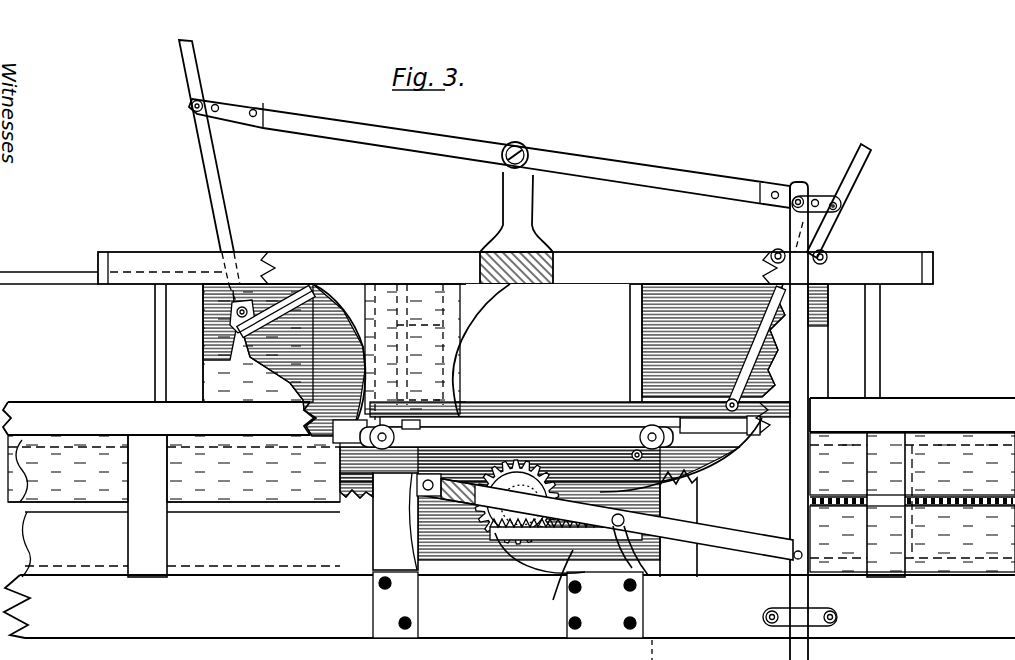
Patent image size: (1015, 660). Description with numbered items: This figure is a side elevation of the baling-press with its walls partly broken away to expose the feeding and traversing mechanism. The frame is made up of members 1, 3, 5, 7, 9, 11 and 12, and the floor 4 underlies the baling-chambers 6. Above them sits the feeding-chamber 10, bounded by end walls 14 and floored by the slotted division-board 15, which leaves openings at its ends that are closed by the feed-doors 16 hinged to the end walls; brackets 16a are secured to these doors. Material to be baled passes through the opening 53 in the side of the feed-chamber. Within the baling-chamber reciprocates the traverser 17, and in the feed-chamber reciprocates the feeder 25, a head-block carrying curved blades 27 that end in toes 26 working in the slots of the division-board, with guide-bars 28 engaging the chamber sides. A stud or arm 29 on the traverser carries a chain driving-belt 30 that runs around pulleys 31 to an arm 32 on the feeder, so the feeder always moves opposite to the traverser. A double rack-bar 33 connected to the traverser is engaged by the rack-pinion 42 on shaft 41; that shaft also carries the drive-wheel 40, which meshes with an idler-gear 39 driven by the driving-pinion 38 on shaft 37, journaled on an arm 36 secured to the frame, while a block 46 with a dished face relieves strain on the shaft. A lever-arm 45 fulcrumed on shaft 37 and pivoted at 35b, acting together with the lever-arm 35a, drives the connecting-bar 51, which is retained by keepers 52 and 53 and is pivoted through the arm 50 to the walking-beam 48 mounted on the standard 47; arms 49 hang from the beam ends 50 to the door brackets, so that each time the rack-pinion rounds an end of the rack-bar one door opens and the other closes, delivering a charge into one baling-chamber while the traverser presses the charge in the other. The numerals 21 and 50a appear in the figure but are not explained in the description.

The frame 1 is at (509, 616).
The frame 3 is at (655, 162).
The floor 4 is at (820, 186).
The frame 5 is at (516, 504).
The baling-chamber 6 is at (846, 472).
The frame 7 is at (509, 416).
The frame 9 is at (517, 343).
The feeding-chamber 10 is at (256, 378).
The frame 11 is at (418, 250).
The frame 12 is at (556, 258).
The end wall 14 is at (155, 348).
The slotted division-board 15 is at (546, 436).
The feed-door 16 is at (295, 283).
The bracket 16a is at (774, 412).
The traverser 17 is at (386, 484).
The disc 21 is at (284, 360).
The feeder 25 is at (409, 352).
The toe 26 is at (360, 434).
The curved blade 27 is at (470, 332).
The guide-bar 28 is at (62, 290).
The stud or arm 29 is at (656, 491).
The driving-belt 30 is at (562, 450).
The pulley 31 is at (442, 428).
The arm 32 is at (412, 428).
The double rack-bar 33 is at (533, 582).
The lever-arm 35a is at (462, 493).
The pivotal connection 35b is at (427, 492).
The arm 36 is at (621, 544).
The shaft 37 is at (604, 562).
The driving-pinion 38 is at (642, 577).
The idler-gear 39 is at (555, 598).
The drive-wheel 40 is at (517, 502).
The shaft 41 is at (472, 563).
The rack-pinion 42 is at (508, 514).
The lever-arm 45 is at (743, 553).
The block 46 is at (395, 521).
The standard 47 is at (516, 197).
The walking-beam 48 is at (489, 153).
The arm 49 is at (210, 165).
The walking-beam end 50 is at (200, 104).
The pivot pin 50a is at (786, 183).
The connecting-bar 51 is at (790, 222).
The keeper 52 is at (827, 257).
The opening 53 is at (649, 455).